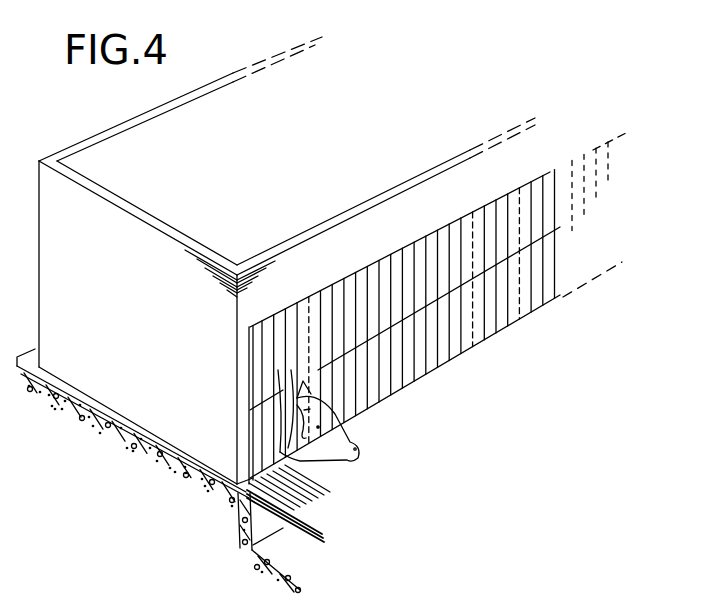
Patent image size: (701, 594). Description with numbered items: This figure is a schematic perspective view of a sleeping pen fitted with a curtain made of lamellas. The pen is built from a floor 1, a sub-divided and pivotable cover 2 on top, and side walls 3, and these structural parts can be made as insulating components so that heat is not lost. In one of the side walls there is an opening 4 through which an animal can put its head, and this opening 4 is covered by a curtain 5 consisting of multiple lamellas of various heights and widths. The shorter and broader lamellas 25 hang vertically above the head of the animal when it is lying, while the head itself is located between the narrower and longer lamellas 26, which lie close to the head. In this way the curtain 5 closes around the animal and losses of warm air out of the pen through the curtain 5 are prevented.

The floor 1 is at (185, 459).
The cover 2 is at (88, 155).
The side walls 3 is at (283, 276).
The opening 4 is at (350, 277).
The curtain 5 is at (422, 370).
The shorter and broader lamellas 25 is at (522, 207).
The narrower and longer lamellas 26 is at (262, 347).